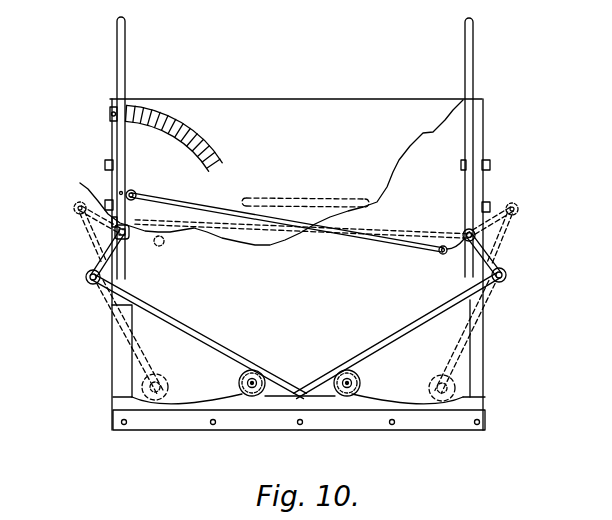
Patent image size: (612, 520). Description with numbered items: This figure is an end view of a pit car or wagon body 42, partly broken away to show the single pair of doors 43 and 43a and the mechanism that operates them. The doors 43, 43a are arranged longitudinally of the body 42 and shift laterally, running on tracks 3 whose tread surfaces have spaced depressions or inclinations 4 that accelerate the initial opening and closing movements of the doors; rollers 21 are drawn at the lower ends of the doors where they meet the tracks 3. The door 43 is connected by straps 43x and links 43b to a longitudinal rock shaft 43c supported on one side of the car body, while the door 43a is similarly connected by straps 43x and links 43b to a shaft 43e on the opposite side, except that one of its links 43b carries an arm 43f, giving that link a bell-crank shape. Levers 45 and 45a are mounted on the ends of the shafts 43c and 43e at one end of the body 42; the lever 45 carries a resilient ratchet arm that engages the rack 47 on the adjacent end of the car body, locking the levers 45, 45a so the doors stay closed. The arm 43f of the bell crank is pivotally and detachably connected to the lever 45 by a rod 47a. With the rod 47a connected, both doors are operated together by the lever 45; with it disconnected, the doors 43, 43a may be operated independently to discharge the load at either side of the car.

The tracks 3 is at (272, 400).
The depressions or inclinations 4 is at (187, 402).
The roller 21 is at (262, 377).
The pit car or wagon body 42 is at (482, 122).
The door 43 is at (208, 338).
The door 43a is at (418, 324).
The links 43b is at (532, 257).
The longitudinal rock shaft 43c is at (125, 193).
The shaft 43e is at (476, 236).
The arm 43f is at (440, 254).
The straps 43x is at (518, 308).
The lever 45 is at (125, 52).
The lever 45a is at (473, 52).
The rack 47 is at (163, 112).
The rod 47a is at (337, 232).